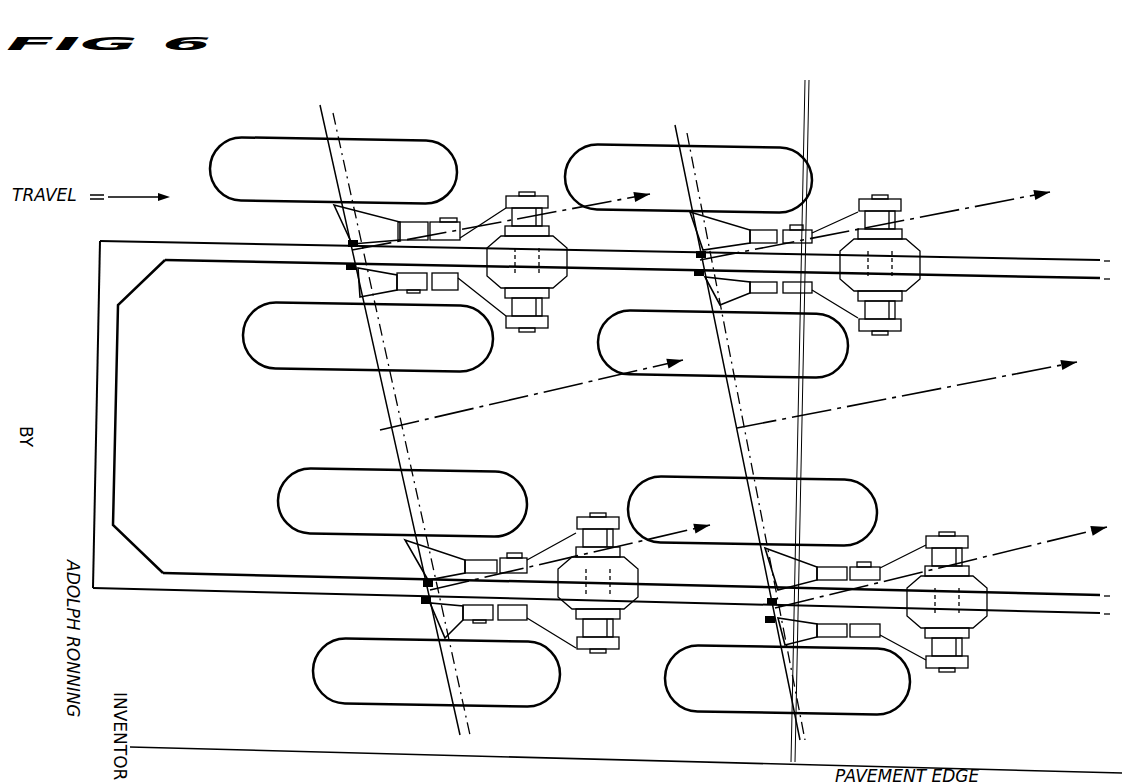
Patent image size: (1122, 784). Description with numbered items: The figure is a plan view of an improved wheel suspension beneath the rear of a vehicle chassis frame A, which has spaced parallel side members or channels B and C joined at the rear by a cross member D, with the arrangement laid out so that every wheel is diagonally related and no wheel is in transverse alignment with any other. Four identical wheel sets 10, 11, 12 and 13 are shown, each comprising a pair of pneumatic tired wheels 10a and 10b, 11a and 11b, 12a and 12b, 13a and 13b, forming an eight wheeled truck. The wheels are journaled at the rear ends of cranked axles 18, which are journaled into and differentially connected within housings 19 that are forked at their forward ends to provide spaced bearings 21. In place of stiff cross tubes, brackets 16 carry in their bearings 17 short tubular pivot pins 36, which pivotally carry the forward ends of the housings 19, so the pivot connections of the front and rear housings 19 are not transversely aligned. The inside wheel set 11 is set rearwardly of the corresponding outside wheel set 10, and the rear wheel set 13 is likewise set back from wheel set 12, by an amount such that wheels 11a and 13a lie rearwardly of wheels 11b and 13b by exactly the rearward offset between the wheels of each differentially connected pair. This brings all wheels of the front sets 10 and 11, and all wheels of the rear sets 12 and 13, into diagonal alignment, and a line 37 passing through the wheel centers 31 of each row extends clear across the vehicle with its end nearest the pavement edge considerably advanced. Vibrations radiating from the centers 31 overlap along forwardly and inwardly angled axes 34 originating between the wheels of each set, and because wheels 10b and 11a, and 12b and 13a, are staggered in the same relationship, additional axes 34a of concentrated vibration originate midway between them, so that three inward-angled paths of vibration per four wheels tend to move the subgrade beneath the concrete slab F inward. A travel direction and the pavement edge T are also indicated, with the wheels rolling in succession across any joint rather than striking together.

The wheel set 10 is at (886, 506).
The pneumatic tired wheel 10a is at (787, 680).
The pneumatic tired wheel 10b is at (752, 511).
The wheel set 11 is at (750, 142).
The pneumatic tired wheel 11a is at (722, 344).
The pneumatic tired wheel 11b is at (688, 178).
The wheel set 12 is at (302, 689).
The pneumatic tired wheel 12a is at (436, 672).
The pneumatic tired wheel 12b is at (402, 502).
The wheel set 13 is at (433, 137).
The pneumatic tired wheel 13a is at (367, 337).
The pneumatic tired wheel 13b is at (333, 170).
The bracket 16 is at (567, 252).
The bearing 17 is at (549, 231).
The cranked axle 18 is at (340, 215).
The housing 19 is at (812, 236).
The bearing 21 is at (548, 205).
The wheel center 31 is at (337, 174).
The axis of concentrated vibration 34 is at (618, 200).
The axis of concentrated vibration 34a is at (560, 387).
The tubular pivot pin 36 is at (506, 205).
The diagonal alignment line 37 is at (378, 430).
The vehicle chassis frame A is at (1006, 256).
The side member B is at (1060, 613).
The side member C is at (1012, 278).
The cross member D is at (112, 438).
The concrete slab F is at (600, 746).
The track line T is at (790, 742).